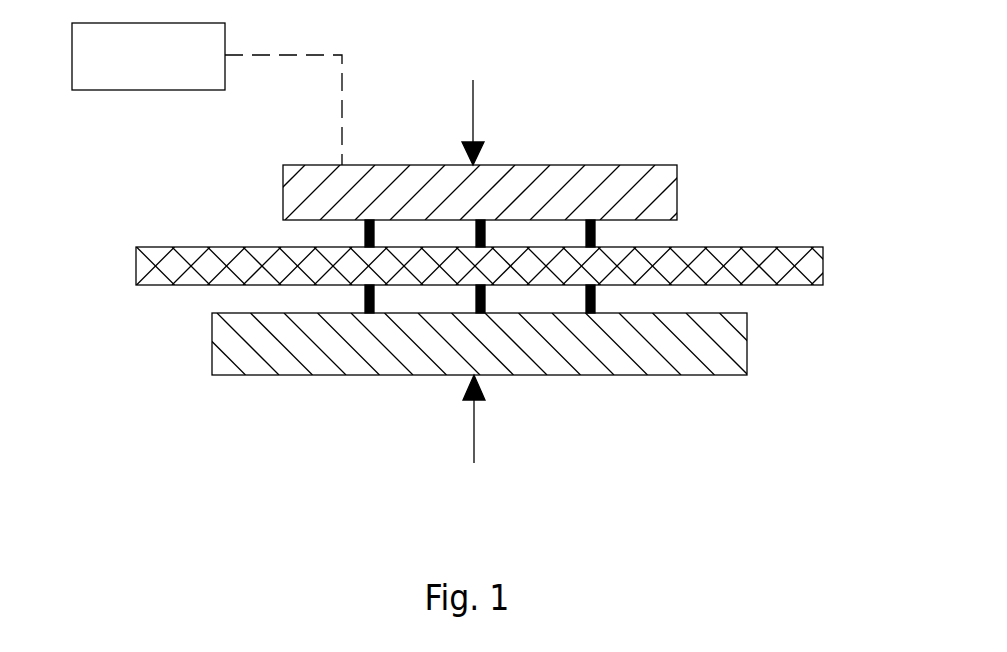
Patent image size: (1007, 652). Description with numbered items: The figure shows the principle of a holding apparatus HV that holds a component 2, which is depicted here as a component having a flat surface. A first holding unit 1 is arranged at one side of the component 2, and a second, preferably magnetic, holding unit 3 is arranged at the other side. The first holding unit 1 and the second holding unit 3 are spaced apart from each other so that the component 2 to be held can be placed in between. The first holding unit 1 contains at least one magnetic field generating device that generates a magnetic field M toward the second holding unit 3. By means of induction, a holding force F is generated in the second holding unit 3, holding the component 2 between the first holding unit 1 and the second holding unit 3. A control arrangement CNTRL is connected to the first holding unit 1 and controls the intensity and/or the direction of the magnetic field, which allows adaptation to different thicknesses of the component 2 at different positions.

The first holding unit 1 is at (663, 192).
The component 2 is at (802, 260).
The second holding unit 3 is at (735, 347).
The magnetic field M is at (365, 293).
The holding force F is at (484, 271).
The holding apparatus HV is at (885, 118).
The control arrangement CNTRL is at (207, 94).